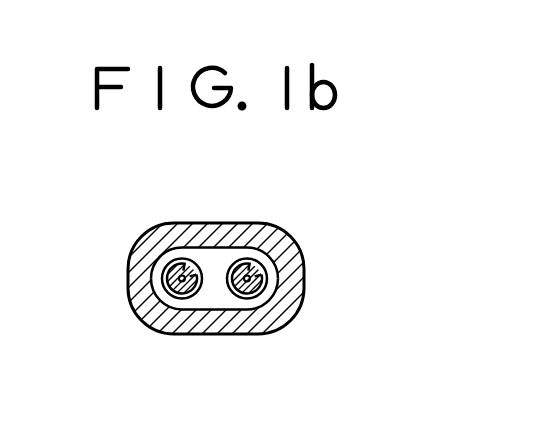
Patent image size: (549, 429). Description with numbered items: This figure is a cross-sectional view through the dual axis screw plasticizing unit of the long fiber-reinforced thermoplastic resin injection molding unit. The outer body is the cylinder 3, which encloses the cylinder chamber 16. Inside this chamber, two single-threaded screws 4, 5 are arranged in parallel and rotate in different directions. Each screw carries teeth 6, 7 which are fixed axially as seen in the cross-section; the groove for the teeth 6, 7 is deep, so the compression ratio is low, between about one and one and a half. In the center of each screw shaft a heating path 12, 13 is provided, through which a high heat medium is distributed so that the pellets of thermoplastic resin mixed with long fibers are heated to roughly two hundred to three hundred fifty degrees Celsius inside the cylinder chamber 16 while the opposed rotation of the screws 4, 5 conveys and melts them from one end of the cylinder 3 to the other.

The cylinder 3 is at (282, 312).
The screw 4 is at (252, 262).
The screw 5 is at (153, 253).
The teeth 6 is at (243, 247).
The teeth 7 is at (203, 258).
The heating path 12 is at (246, 288).
The heating path 13 is at (179, 295).
The cylinder chamber 16 is at (213, 303).